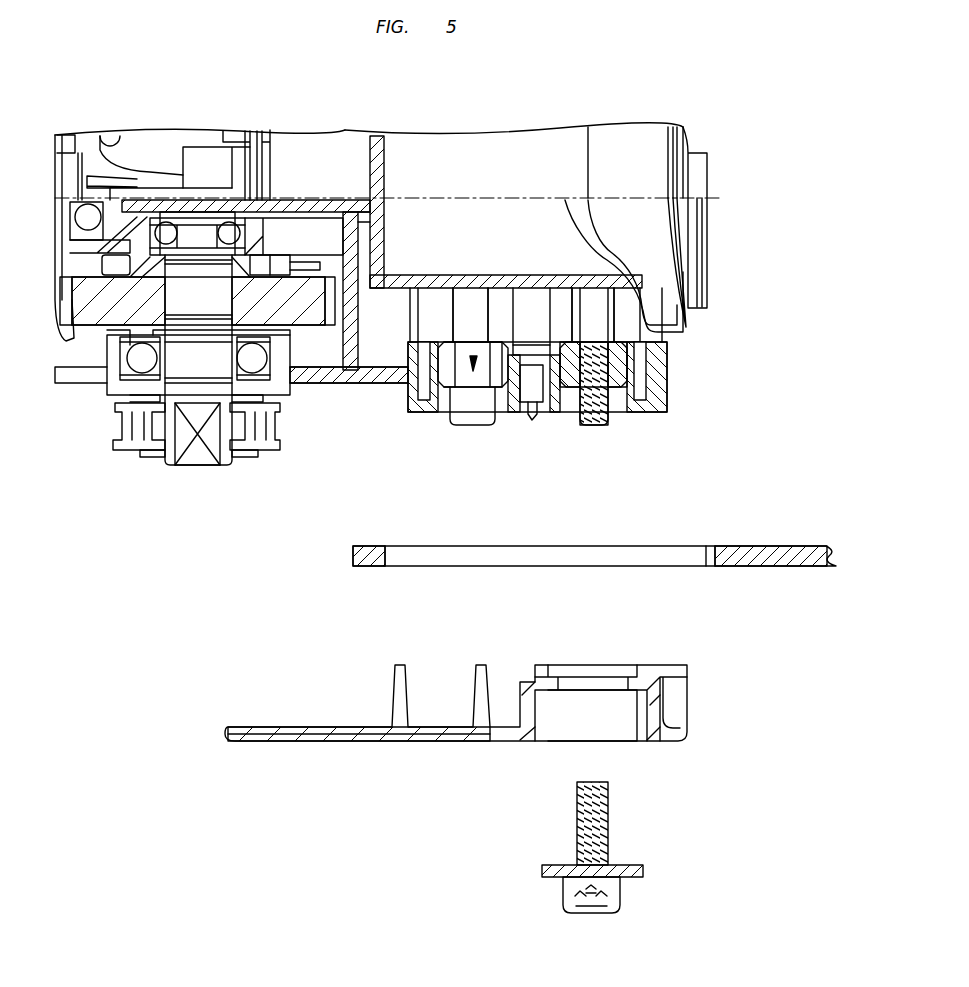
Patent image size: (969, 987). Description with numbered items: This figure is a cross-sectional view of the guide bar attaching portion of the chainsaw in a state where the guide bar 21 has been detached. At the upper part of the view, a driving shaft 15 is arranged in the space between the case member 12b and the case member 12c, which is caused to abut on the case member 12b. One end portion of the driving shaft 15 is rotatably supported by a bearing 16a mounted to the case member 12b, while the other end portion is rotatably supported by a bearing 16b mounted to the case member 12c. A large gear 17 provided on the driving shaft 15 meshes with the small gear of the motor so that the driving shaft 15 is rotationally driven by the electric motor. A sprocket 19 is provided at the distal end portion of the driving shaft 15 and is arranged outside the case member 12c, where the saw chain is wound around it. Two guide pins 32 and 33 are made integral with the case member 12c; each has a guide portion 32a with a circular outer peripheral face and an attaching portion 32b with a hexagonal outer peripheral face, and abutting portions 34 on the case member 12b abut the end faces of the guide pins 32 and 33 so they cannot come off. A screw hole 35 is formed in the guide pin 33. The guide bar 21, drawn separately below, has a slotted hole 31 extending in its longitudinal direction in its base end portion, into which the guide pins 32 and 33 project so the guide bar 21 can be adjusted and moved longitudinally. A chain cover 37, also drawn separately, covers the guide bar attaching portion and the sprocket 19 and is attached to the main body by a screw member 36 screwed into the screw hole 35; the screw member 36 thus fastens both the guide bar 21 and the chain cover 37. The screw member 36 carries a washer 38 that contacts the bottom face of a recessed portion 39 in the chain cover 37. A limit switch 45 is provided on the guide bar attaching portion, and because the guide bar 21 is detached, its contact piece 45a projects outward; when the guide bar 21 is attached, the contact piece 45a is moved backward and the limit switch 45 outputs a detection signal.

The case member 12b is at (332, 200).
The case member 12c is at (322, 386).
The driving shaft 15 is at (202, 292).
The bearing 16a is at (167, 225).
The bearing 16b is at (257, 362).
The large gear 17 is at (86, 292).
The sprocket 19 is at (137, 432).
The guide bar 21 is at (780, 564).
The slotted hole 31 is at (701, 564).
The guide pin 32 is at (473, 350).
The guide portion 32a is at (470, 402).
The attaching portion 32b is at (506, 355).
The guide pin 33 is at (624, 365).
The abutting portion 34 is at (452, 300).
The screw hole 35 is at (594, 412).
The screw member 36 is at (577, 832).
The chain cover 37 is at (325, 742).
The washer 38 is at (630, 879).
The recessed portion 39 is at (634, 695).
The limit switch 45 is at (534, 375).
The contact piece 45a is at (534, 405).